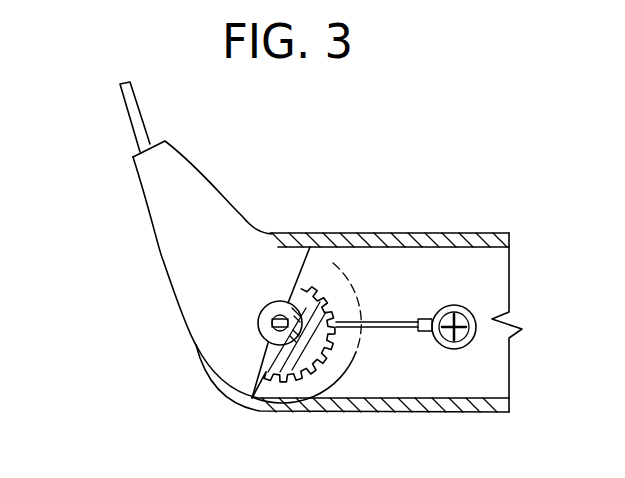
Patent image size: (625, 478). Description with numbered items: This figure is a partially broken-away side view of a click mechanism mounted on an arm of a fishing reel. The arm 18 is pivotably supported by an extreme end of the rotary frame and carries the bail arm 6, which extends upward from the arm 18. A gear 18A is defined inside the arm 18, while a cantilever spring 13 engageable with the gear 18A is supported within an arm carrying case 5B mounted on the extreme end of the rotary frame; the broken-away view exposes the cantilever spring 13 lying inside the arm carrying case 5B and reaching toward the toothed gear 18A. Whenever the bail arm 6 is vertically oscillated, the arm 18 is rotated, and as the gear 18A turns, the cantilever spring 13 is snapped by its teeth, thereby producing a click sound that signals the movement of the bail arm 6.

The bail arm 6 is at (130, 120).
The arm 18 is at (155, 222).
The gear 18A is at (330, 258).
The arm carrying case 5B is at (460, 232).
The cantilever spring 13 is at (390, 332).